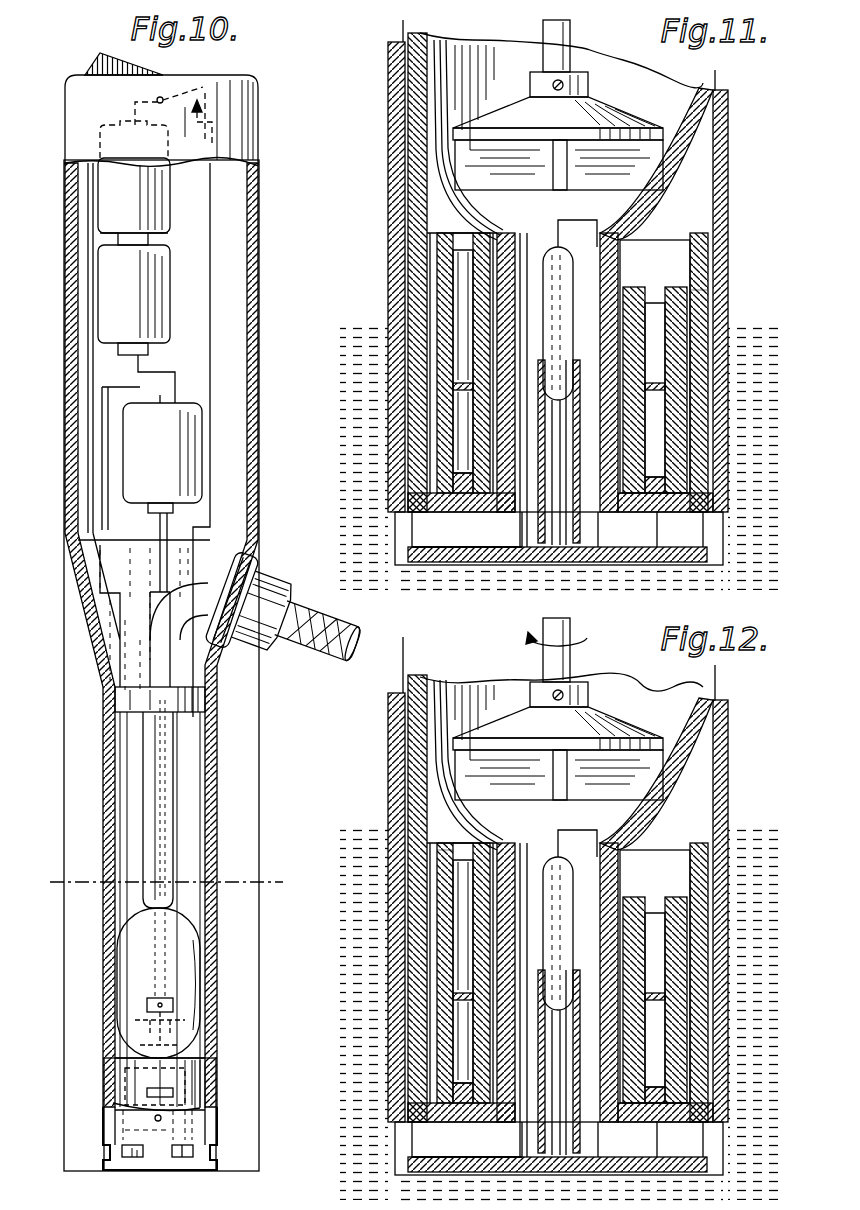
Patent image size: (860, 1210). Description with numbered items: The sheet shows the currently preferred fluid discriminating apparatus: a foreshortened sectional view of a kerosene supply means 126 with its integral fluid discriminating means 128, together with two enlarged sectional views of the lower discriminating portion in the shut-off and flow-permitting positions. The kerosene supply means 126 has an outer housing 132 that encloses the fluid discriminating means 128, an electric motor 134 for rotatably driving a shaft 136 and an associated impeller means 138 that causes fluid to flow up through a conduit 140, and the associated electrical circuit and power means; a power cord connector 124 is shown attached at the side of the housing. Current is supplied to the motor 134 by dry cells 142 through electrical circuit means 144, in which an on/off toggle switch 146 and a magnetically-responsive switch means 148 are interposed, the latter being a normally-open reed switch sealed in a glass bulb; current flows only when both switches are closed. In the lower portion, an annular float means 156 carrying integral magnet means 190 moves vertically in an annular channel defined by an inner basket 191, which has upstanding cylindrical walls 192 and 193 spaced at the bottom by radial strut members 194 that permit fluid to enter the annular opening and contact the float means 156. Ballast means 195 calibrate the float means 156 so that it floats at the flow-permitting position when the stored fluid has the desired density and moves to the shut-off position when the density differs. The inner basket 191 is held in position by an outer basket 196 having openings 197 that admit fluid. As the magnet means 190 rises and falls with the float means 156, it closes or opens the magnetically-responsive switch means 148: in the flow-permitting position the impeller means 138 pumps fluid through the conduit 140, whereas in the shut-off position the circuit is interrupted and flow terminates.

In FIG. 10, the power cord connector 124 is at (312, 652).
In FIG. 10, the kerosene supply means 126 is at (161, 665).
In FIG. 10, the fluid discriminating means 128 is at (160, 1114).
In FIG. 10, the outer housing 132 is at (70, 212).
In FIG. 11, the outer housing 132 is at (723, 118).
In FIG. 12, the outer housing 132 is at (588, 879).
In FIG. 10, the electric motor 134 is at (162, 450).
In FIG. 10, the shaft 136 is at (160, 565).
In FIG. 11, the shaft 136 is at (572, 32).
In FIG. 12, the shaft 136 is at (525, 650).
In FIG. 10, the impeller means 138 is at (145, 1013).
In FIG. 11, the impeller means 138 is at (625, 130).
In FIG. 12, the impeller means 138 is at (568, 741).
In FIG. 10, the conduit 140 is at (218, 565).
In FIG. 10, the dry cells 142 is at (145, 201).
In FIG. 10, the electrical circuit means 144 is at (213, 265).
In FIG. 10, the on/off toggle switch 146 is at (140, 63).
In FIG. 10, the magnetically-responsive switch means 148 is at (125, 1088).
In FIG. 11, the magnetically-responsive switch means 148 is at (575, 277).
In FIG. 12, the magnetically-responsive switch means 148 is at (545, 982).
In FIG. 10, the float means 156 is at (180, 1073).
In FIG. 11, the float means 156 is at (685, 297).
In FIG. 12, the float means 156 is at (391, 818).
In FIG. 10, the magnet means 190 is at (212, 1088).
In FIG. 11, the magnet means 190 is at (430, 383).
In FIG. 12, the magnet means 190 is at (474, 1017).
In FIG. 11, the inner basket 191 is at (674, 242).
In FIG. 12, the inner basket 191 is at (699, 940).
In FIG. 11, the upstanding cylindrical wall 192 is at (417, 418).
In FIG. 12, the upstanding cylindrical wall 192 is at (387, 973).
In FIG. 11, the upstanding cylindrical wall 193 is at (580, 242).
In FIG. 12, the upstanding cylindrical wall 193 is at (598, 832).
In FIG. 11, the radial strut members 194 is at (433, 522).
In FIG. 12, the radial strut members 194 is at (503, 1148).
In FIG. 11, the ballast means 195 is at (450, 487).
In FIG. 12, the ballast means 195 is at (498, 1089).
In FIG. 11, the outer basket 196 is at (392, 455).
In FIG. 12, the outer basket 196 is at (496, 898).
In FIG. 10, the openings 197 is at (135, 1152).
In FIG. 11, the openings 197 is at (453, 534).
In FIG. 12, the openings 197 is at (403, 1171).